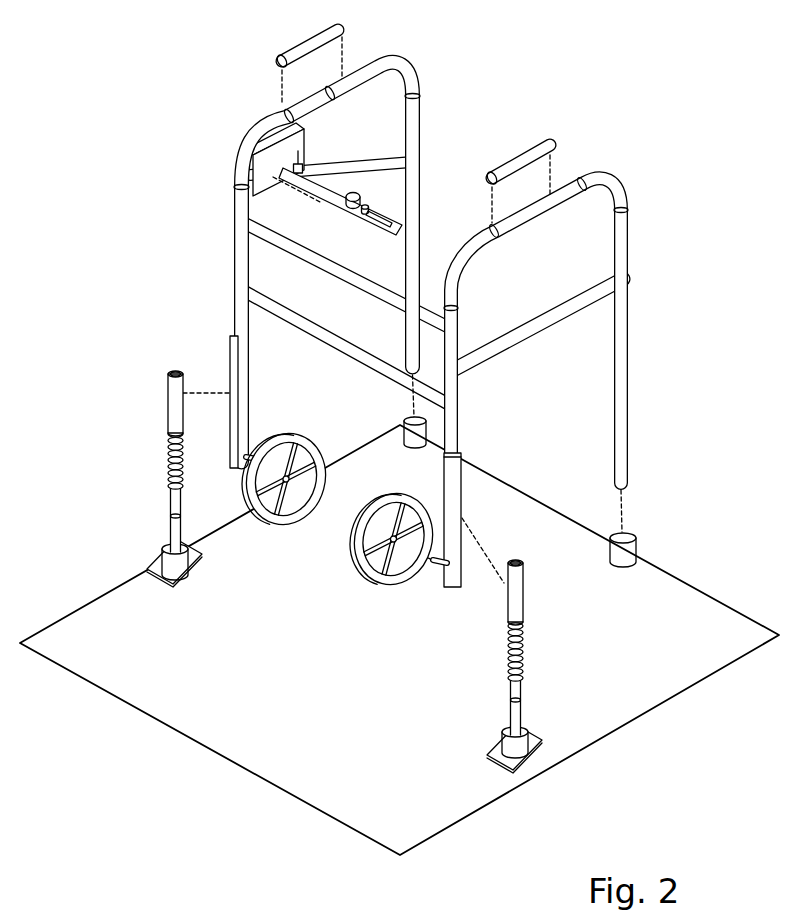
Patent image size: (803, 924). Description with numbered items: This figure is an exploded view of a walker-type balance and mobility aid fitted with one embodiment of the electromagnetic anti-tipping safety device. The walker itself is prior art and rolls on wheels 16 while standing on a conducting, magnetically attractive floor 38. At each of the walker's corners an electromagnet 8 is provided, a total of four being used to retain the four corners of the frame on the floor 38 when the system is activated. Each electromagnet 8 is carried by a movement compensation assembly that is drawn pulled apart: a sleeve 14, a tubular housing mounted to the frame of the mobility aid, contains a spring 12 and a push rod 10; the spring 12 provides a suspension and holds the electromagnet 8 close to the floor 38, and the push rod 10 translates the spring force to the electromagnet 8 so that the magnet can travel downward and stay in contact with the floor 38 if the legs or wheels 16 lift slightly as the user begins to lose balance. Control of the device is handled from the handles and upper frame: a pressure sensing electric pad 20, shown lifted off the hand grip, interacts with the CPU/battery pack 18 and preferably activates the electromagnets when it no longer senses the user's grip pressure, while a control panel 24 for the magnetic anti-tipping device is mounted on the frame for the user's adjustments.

The electromagnet 8 is at (623, 553).
The push rod 10 is at (516, 692).
The spring 12 is at (536, 628).
The sleeve 14 is at (515, 603).
The wheels 16 is at (362, 545).
The CPU/battery pack 18 is at (263, 167).
The pressure sensing electric pad 20 is at (543, 142).
The control panel for the magnetic anti-tipping device 24 is at (247, 212).
The floor 38 is at (378, 695).